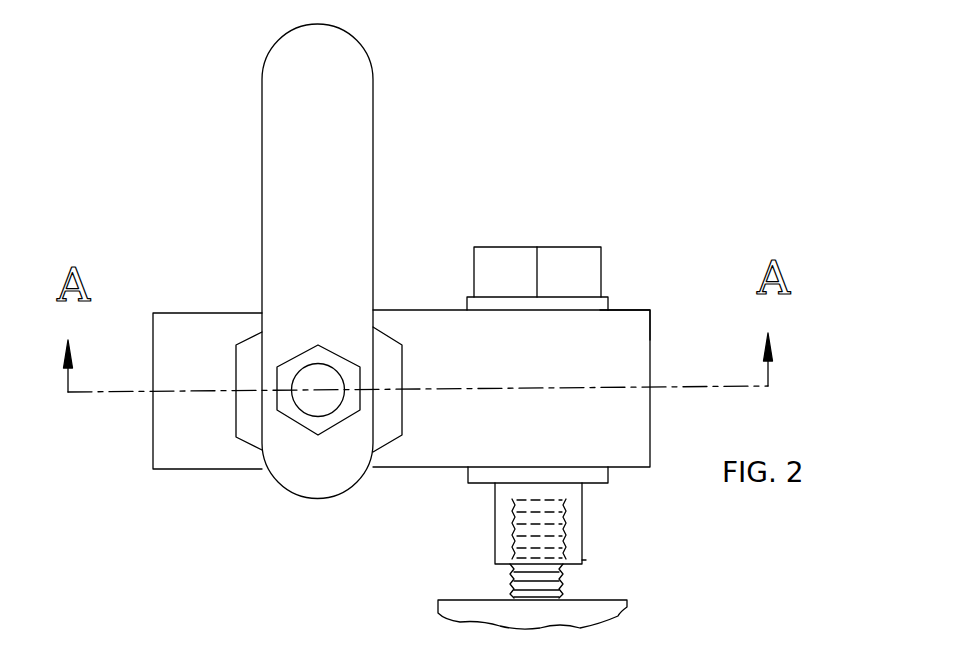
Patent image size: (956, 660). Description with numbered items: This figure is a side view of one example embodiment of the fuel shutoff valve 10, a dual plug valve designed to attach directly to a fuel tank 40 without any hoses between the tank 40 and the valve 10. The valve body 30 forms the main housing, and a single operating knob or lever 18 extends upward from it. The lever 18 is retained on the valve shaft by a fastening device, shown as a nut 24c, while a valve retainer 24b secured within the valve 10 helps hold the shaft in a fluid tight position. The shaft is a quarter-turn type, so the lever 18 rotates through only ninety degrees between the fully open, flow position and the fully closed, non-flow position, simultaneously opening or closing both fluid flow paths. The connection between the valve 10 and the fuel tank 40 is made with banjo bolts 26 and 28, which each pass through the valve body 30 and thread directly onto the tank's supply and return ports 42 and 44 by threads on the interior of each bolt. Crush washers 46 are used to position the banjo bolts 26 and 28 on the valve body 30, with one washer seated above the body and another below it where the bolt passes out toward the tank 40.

The fuel shutoff valve 10 is at (622, 320).
The lever 18 is at (358, 114).
The valve retainer 24b is at (387, 350).
The nut 24c is at (317, 356).
The banjo bolt 26 is at (573, 520).
The banjo bolt 28 is at (485, 530).
The valve body 30 is at (635, 360).
The fuel tank 40 is at (597, 607).
The supply port 42 is at (565, 580).
The return port 44 is at (590, 548).
The crush washers 46 is at (598, 302).